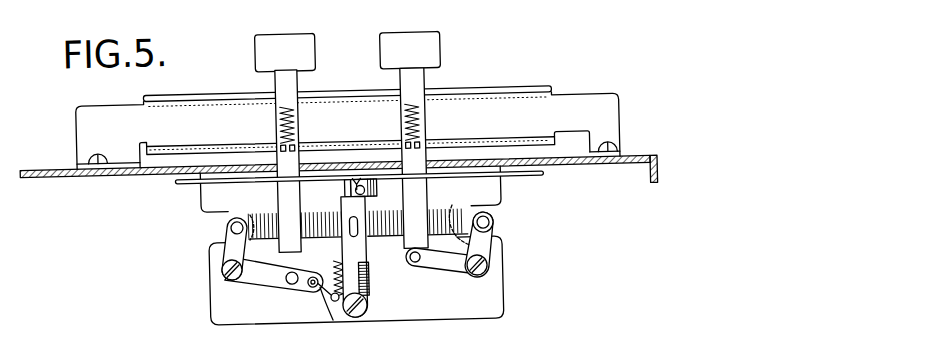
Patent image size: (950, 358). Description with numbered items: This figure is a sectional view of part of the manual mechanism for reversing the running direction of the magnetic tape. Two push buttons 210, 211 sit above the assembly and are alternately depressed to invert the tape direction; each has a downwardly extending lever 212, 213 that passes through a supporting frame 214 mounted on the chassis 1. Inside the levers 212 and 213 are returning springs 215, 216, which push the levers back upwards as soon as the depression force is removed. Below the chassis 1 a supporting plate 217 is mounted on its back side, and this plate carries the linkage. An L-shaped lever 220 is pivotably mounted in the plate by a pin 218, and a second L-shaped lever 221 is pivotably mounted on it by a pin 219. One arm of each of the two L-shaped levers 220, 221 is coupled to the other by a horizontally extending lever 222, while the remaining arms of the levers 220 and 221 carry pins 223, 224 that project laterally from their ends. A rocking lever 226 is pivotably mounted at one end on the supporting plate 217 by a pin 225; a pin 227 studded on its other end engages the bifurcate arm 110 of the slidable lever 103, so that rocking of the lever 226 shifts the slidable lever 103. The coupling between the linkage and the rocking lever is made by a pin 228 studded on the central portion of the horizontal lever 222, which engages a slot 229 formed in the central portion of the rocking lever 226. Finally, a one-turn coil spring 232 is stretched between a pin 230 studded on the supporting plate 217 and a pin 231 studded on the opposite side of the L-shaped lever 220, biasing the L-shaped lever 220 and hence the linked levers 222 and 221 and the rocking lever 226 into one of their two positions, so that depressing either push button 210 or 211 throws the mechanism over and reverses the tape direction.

The chassis 1 is at (40, 161).
The slidable lever 103 is at (180, 180).
The bifurcate arm 110 is at (361, 184).
The push button 210 is at (266, 46).
The push button 211 is at (433, 50).
The lever 212 is at (275, 197).
The lever 213 is at (431, 196).
The supporting frame 214 is at (571, 113).
The returning spring 215 is at (281, 126).
The returning spring 216 is at (423, 129).
The supporting plate 217 is at (490, 311).
The pin 218 is at (215, 270).
The pin 219 is at (484, 277).
The L-shaped lever 220 is at (228, 250).
The L-shaped lever 221 is at (483, 254).
The horizontally extending lever 222 is at (469, 214).
The pin 223 is at (277, 287).
The pin 224 is at (420, 272).
The pin 225 is at (356, 319).
The rocking lever 226 is at (364, 300).
The pin 227 is at (344, 182).
The pin 228 is at (349, 197).
The slot 229 is at (349, 277).
The pin 230 is at (338, 270).
The pin 231 is at (309, 291).
The one-turn coil spring 232 is at (334, 323).